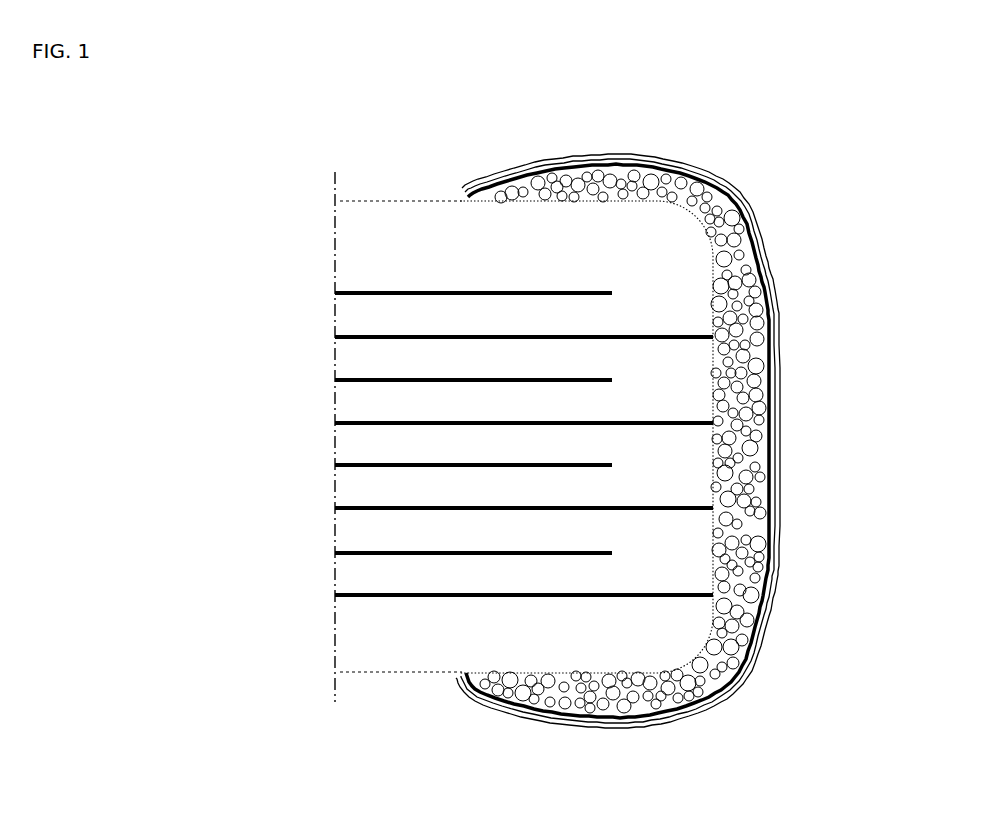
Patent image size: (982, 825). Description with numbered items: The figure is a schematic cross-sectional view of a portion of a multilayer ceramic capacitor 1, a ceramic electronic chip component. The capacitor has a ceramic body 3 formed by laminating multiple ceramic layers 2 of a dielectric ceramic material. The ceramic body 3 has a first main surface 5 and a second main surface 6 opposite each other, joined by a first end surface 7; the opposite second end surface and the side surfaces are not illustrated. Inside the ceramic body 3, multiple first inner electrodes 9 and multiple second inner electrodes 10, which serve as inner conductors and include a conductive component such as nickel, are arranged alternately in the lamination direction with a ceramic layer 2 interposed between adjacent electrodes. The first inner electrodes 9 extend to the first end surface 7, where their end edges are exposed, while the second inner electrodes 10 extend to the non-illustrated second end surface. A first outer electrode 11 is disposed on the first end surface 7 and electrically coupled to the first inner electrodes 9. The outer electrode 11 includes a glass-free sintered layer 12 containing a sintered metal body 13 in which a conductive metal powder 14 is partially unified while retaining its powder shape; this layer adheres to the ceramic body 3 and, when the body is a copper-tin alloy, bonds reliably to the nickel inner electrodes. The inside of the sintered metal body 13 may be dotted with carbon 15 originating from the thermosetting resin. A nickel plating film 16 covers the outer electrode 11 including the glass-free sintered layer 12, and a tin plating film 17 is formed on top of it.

The multilayer ceramic capacitor 1 is at (377, 115).
The ceramic layers 2 is at (470, 431).
The ceramic body 3 is at (330, 256).
The first main surface 5 is at (446, 201).
The second main surface 6 is at (383, 672).
The first end surface 7 is at (713, 377).
The first inner electrodes 9 is at (452, 510).
The second inner electrodes 10 is at (412, 378).
The first outer electrode 11 is at (661, 455).
The glass-free sintered layer 12 is at (760, 264).
The sintered metal body 13 is at (750, 540).
The conductive metal powder 14 is at (748, 608).
The carbon 15 is at (671, 441).
The nickel plating film 16 is at (730, 670).
The tin plating film 17 is at (695, 707).